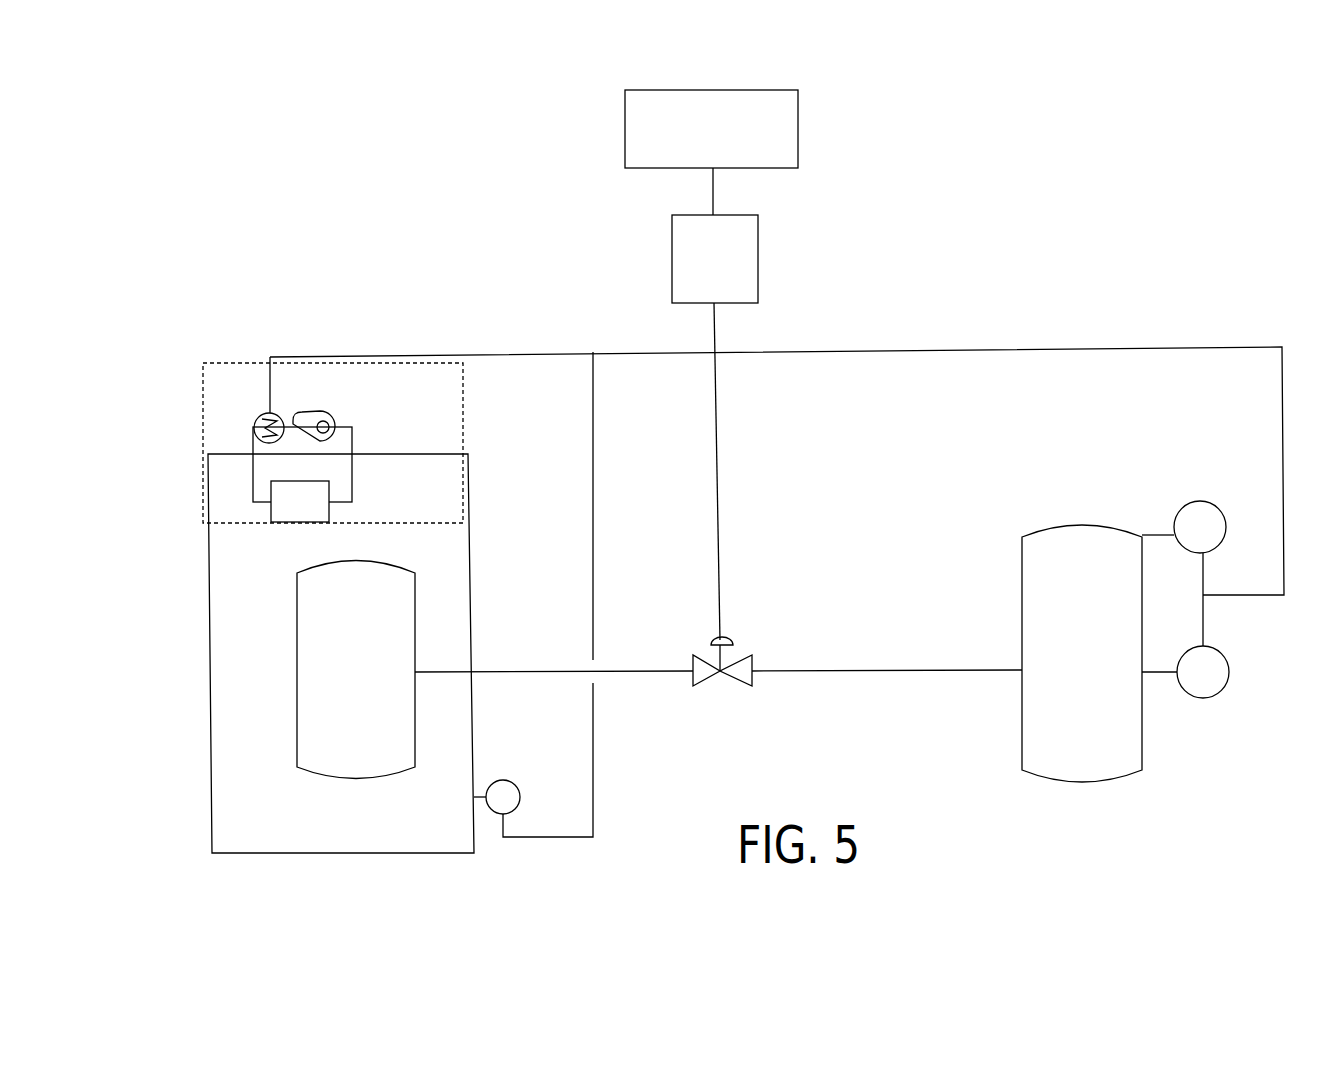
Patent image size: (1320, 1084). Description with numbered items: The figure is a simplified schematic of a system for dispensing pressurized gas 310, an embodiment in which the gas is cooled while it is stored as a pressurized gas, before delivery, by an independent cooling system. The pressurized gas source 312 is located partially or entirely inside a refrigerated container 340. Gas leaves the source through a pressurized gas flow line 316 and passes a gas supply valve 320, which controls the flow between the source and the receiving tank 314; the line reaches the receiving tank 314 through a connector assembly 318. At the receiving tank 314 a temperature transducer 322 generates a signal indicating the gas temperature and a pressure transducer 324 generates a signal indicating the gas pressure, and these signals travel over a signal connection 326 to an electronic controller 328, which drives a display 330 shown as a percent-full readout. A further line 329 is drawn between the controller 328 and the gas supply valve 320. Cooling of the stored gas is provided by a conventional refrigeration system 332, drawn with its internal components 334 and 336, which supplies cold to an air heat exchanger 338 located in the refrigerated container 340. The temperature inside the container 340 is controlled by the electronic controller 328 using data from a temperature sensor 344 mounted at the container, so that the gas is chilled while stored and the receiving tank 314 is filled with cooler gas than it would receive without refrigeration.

The system for dispensing pressurized gas 310 is at (987, 223).
The pressurized gas source 312 is at (297, 598).
The receiving tank 314 is at (1143, 747).
The pressurized gas flow line 316 is at (648, 672).
The connector assembly 318 is at (907, 671).
The gas supply valve 320 is at (722, 674).
The temperature transducer 322 is at (1220, 694).
The pressure transducer 324 is at (1199, 502).
The signal connection 326 is at (1105, 348).
The electronic controller 328 is at (672, 270).
The control line 329 is at (722, 528).
The display 330 is at (625, 130).
The refrigeration system 332 is at (203, 405).
The cam 334 is at (333, 411).
The motor 336 is at (258, 416).
The air heat exchanger 338 is at (329, 512).
The refrigerated container 340 is at (343, 853).
The temperature sensor 344 is at (502, 780).